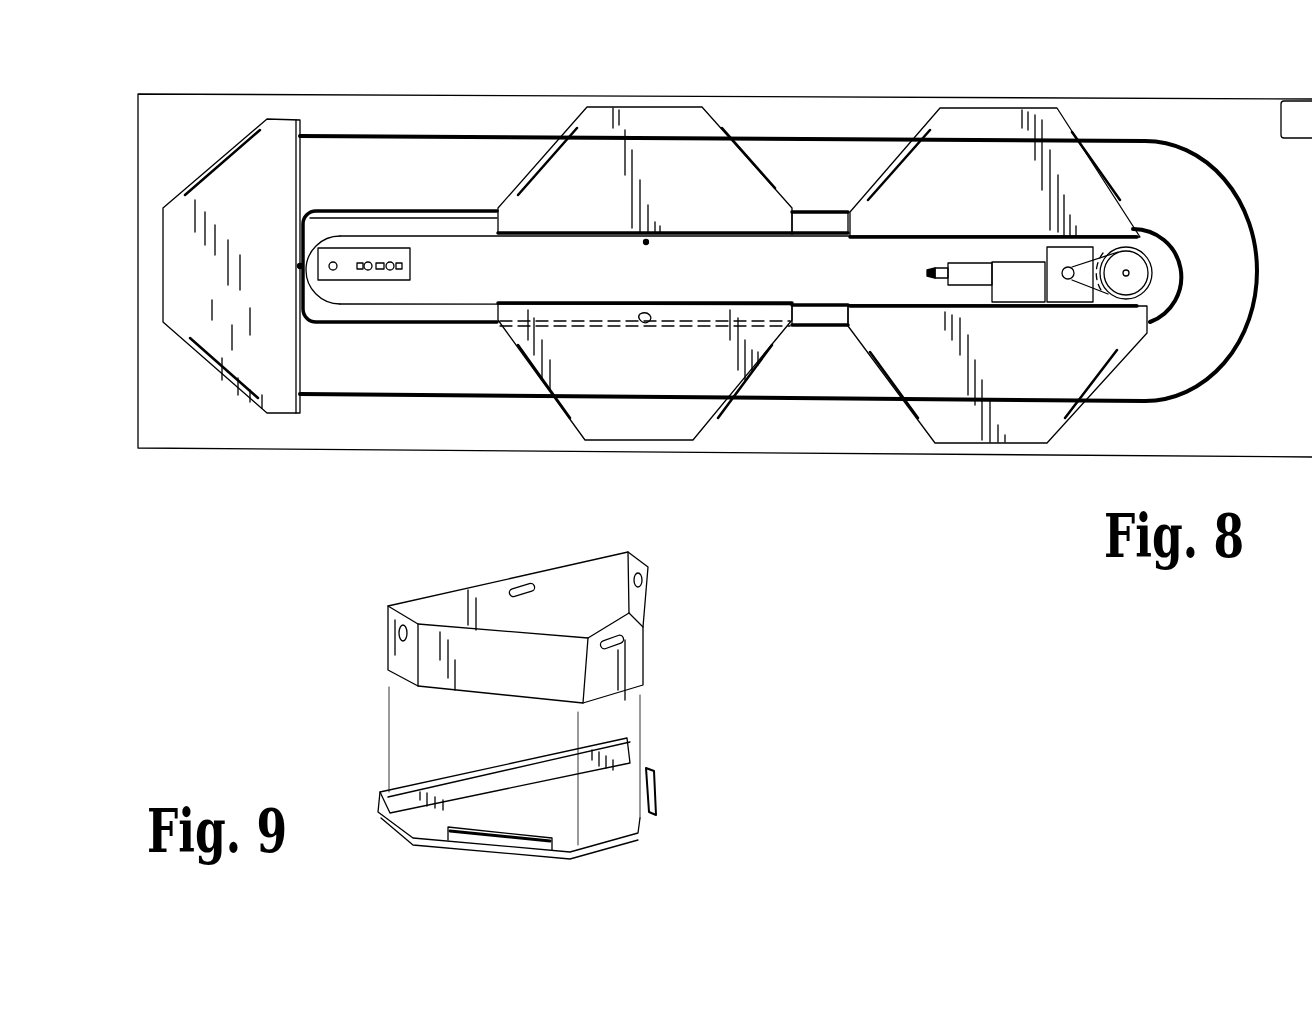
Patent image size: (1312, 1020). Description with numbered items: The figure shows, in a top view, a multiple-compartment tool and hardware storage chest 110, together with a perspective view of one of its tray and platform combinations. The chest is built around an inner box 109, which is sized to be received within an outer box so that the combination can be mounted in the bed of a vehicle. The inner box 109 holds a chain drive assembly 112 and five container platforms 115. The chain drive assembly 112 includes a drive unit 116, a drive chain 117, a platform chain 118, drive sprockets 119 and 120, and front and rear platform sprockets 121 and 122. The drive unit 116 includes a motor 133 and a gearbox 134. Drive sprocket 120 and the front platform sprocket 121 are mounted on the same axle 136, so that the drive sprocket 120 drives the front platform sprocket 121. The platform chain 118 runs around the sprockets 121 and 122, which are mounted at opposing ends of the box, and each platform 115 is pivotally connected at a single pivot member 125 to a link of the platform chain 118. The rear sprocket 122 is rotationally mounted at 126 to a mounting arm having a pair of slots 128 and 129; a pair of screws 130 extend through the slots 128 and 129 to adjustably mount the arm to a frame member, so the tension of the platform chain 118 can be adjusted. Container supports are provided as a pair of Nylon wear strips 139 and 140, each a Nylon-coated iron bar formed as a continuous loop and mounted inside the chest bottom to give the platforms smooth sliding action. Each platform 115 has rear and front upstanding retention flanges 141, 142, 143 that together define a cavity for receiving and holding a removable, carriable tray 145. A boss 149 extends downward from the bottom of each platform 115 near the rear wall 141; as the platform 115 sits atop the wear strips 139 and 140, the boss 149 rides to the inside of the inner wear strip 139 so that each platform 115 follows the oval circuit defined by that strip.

In FIG. 8, the inner box 109 is at (1098, 96).
In FIG. 8, the multiple-compartment tool and hardware storage chest 110 is at (848, 87).
In FIG. 8, the chain drive assembly 112 is at (1157, 262).
In FIG. 8, the container platform 115 is at (273, 219).
In FIG. 9, the container platform 115 is at (647, 770).
In FIG. 8, the drive unit 116 is at (918, 258).
In FIG. 8, the drive chain 117 is at (1078, 287).
In FIG. 8, the platform chain 118 is at (448, 297).
In FIG. 8, the drive sprocket 119 is at (1068, 280).
In FIG. 8, the drive sprocket 120 is at (1128, 290).
In FIG. 8, the front platform sprocket 121 is at (1150, 278).
In FIG. 8, the rear platform sprocket 122 is at (323, 284).
In FIG. 8, the pivot member 125 is at (300, 267).
In FIG. 8, the rotational mounting 126 is at (333, 262).
In FIG. 8, the slot 128 is at (365, 262).
In FIG. 8, the slot 129 is at (402, 277).
In FIG. 8, the screw 130 is at (390, 271).
In FIG. 8, the motor 133 is at (1022, 290).
In FIG. 8, the gearbox 134 is at (1047, 254).
In FIG. 8, the axle 136 is at (1142, 228).
In FIG. 8, the inner Nylon wear strip 139 is at (807, 326).
In FIG. 8, the outer Nylon wear strip 140 is at (775, 404).
In FIG. 9, the rear retention flange 141 is at (470, 786).
In FIG. 9, the retention flange 142 is at (493, 841).
In FIG. 9, the front retention flange 143 is at (654, 788).
In FIG. 9, the tray 145 is at (628, 552).
In FIG. 8, the boss 149 is at (676, 303).